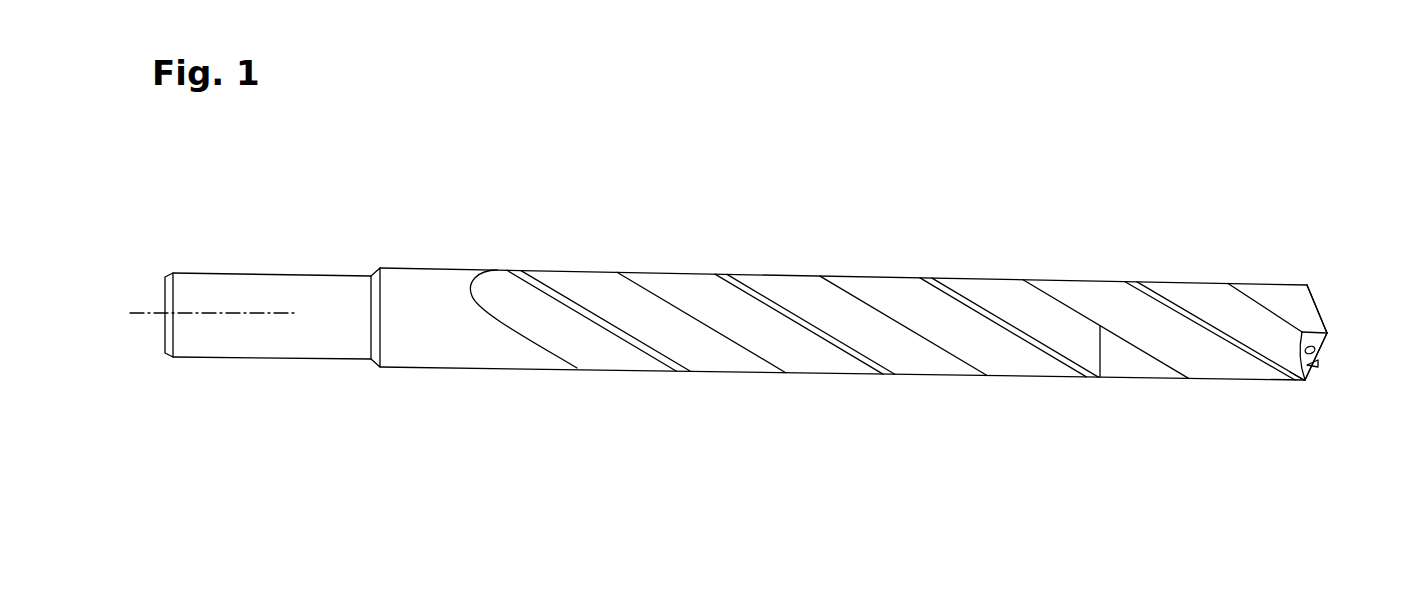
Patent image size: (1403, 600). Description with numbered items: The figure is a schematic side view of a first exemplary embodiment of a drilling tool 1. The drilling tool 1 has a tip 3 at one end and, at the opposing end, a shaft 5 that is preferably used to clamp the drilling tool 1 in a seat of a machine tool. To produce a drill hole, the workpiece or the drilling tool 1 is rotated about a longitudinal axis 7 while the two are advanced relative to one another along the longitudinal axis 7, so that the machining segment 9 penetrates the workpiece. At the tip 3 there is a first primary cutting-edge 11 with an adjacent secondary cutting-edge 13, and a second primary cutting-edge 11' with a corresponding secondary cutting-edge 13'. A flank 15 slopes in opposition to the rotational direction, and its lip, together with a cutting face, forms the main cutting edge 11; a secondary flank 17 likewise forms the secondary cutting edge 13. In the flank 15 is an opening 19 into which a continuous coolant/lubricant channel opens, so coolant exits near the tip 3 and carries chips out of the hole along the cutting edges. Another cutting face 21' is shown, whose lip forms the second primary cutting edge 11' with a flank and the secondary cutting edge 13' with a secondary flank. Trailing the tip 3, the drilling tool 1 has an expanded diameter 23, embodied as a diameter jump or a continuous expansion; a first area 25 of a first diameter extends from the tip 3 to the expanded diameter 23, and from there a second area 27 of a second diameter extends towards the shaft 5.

The drilling tool 1 is at (884, 171).
The tip 3 is at (1338, 392).
The shaft 5 is at (265, 350).
The longitudinal axis 7 is at (145, 316).
The machining segment 9 is at (842, 388).
The first primary cutting-edge 11 is at (1327, 388).
The second primary cutting-edge 11' is at (1344, 286).
The secondary cutting-edge 13 is at (1300, 387).
The secondary cutting-edge 13' is at (1305, 279).
The flank 15 is at (1318, 364).
The secondary flank 17 is at (1282, 377).
The opening 19 is at (1318, 349).
The cutting face 21' is at (1265, 278).
The expanded diameter 23 is at (1099, 388).
The first area 25 is at (1175, 389).
The second area 27 is at (965, 388).